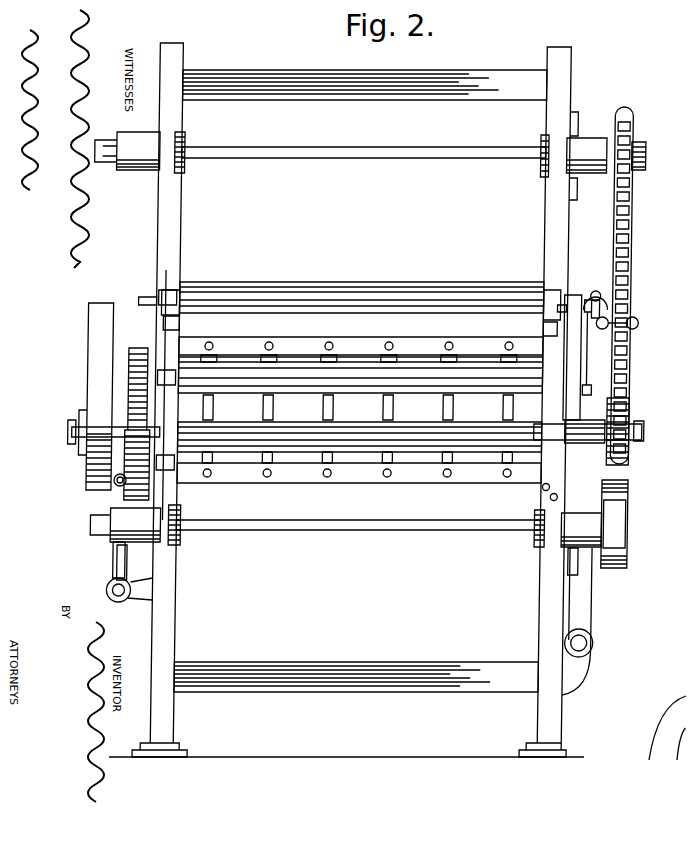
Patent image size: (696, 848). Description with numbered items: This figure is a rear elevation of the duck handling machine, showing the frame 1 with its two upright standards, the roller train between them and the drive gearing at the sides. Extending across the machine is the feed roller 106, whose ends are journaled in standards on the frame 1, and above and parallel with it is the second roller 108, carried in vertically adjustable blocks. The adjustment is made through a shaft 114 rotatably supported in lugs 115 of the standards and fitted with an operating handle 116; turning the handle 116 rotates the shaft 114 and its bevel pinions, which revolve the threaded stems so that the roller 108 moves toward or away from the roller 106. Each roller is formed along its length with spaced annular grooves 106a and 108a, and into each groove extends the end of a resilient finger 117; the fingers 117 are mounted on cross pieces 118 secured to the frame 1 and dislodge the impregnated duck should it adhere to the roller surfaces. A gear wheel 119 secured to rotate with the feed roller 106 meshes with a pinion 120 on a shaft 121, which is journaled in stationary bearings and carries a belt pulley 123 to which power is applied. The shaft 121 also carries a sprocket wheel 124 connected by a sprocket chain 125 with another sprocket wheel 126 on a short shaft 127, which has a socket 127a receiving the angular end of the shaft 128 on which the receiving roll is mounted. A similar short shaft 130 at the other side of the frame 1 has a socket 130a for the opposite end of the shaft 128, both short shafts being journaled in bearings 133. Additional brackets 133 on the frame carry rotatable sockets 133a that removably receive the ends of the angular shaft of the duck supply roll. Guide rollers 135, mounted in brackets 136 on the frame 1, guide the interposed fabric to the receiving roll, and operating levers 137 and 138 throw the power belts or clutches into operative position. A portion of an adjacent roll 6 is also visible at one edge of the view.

The frame 1 is at (326, 72).
The roll 6 is at (690, 718).
The feed roller 106 is at (332, 452).
The annular grooves 106a is at (275, 443).
The second roller 108 is at (302, 357).
The annular grooves 108a is at (352, 355).
The shaft 114 is at (147, 298).
The lugs 115 is at (575, 308).
The operating handle 116 is at (631, 322).
The resilient fingers 117 is at (217, 356).
The cross pieces 118 is at (436, 350).
The gear wheel 119 is at (141, 346).
The pinion 120 is at (100, 496).
The shaft 121 is at (73, 432).
The belt pulley 123 is at (92, 388).
The sprocket wheel 124 is at (636, 422).
The sprocket chain 125 is at (636, 292).
The sprocket wheel 126 is at (637, 189).
The short shaft 127 is at (646, 150).
The socket 127a is at (546, 176).
The shaft 128 is at (339, 147).
The short shaft 130 is at (114, 137).
The socket 130a is at (187, 136).
The bearings 133 is at (131, 172).
The sockets 133a is at (175, 545).
The guide rollers 135 is at (342, 277).
The brackets 136 is at (184, 282).
The operating lever 137 is at (120, 566).
The operating lever 138 is at (588, 370).